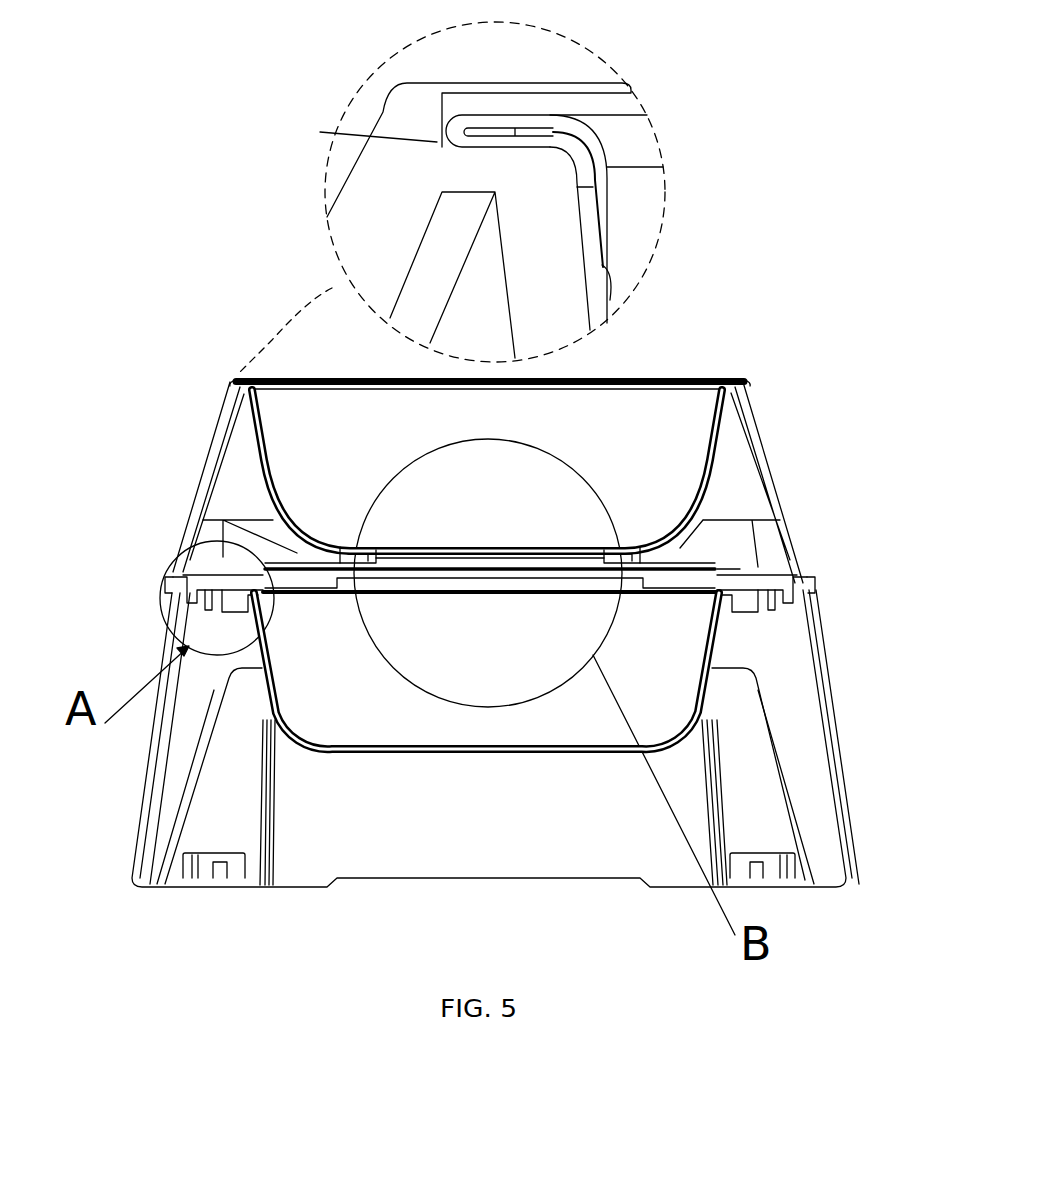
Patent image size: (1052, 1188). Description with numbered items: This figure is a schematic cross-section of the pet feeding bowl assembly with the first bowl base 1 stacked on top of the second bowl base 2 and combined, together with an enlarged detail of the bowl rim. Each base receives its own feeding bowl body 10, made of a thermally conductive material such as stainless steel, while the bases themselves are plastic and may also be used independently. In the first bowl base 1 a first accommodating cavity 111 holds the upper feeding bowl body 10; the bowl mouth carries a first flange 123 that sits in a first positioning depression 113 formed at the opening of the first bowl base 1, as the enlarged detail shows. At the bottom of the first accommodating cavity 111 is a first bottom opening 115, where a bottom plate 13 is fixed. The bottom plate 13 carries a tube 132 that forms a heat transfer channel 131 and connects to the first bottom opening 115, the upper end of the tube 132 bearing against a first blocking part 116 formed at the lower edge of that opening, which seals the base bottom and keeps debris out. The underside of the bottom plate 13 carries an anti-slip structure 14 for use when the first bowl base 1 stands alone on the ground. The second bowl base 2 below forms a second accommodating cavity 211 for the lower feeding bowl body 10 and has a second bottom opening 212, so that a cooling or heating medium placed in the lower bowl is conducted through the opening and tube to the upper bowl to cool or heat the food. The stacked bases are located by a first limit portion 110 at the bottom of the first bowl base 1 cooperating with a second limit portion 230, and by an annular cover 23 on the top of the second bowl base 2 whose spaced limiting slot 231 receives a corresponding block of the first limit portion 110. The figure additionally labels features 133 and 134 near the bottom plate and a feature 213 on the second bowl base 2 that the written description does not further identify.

The first bowl base 1 is at (197, 480).
The second bowl base 2 is at (130, 840).
The feeding bowl body 10 is at (610, 237).
The bottom plate 13 is at (783, 567).
The anti-slip structure 14 is at (780, 600).
The annular cover 23 is at (810, 592).
The first limit portion 110 is at (176, 581).
The first accommodating cavity 111 is at (727, 417).
The first positioning depression 113 is at (423, 230).
The first bottom opening 115 is at (372, 545).
The first blocking part 116 is at (300, 548).
The first flange 123 is at (490, 128).
The heat transfer channel 131 is at (467, 572).
The tube 132 is at (380, 555).
The platform bottom plate 133 is at (730, 597).
The platform side rib 134 is at (733, 570).
The second accommodating cavity 211 is at (267, 687).
The second bottom opening 212 is at (298, 722).
The flange tab 213 is at (717, 583).
The second limit portion 230 is at (180, 583).
The limiting slot 231 is at (200, 600).